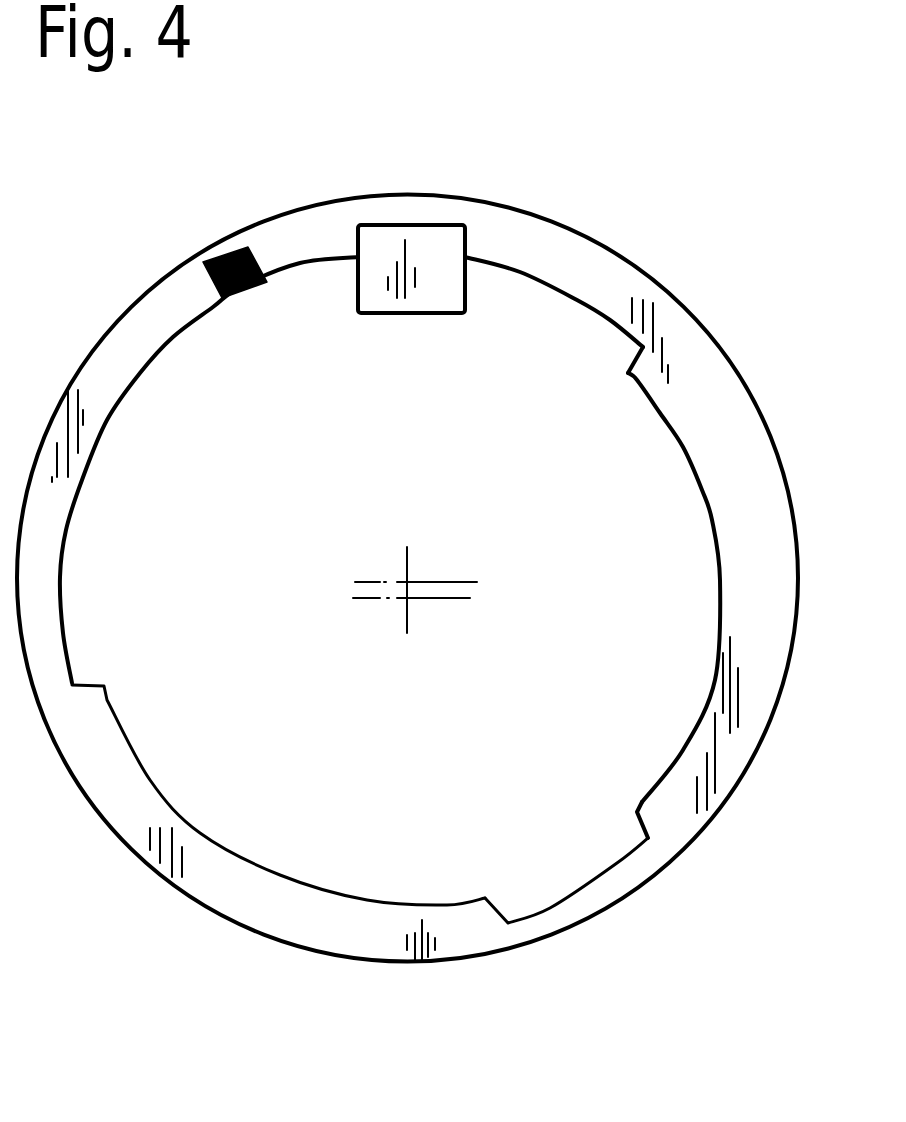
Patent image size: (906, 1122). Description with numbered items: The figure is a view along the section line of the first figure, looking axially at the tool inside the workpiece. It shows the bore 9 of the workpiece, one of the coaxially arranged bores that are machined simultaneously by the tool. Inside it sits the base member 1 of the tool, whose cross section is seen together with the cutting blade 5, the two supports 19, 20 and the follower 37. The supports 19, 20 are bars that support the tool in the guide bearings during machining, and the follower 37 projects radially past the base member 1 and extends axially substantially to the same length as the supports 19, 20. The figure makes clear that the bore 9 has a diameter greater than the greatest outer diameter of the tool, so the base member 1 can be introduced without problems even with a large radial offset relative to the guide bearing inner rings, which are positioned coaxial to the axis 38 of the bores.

The base member 1 is at (428, 554).
The cutting blade 5 is at (238, 243).
The bore 9 is at (681, 300).
The support 19 is at (613, 839).
The support 20 is at (575, 308).
The follower 37 is at (388, 245).
The axis of the bores 38 is at (405, 582).